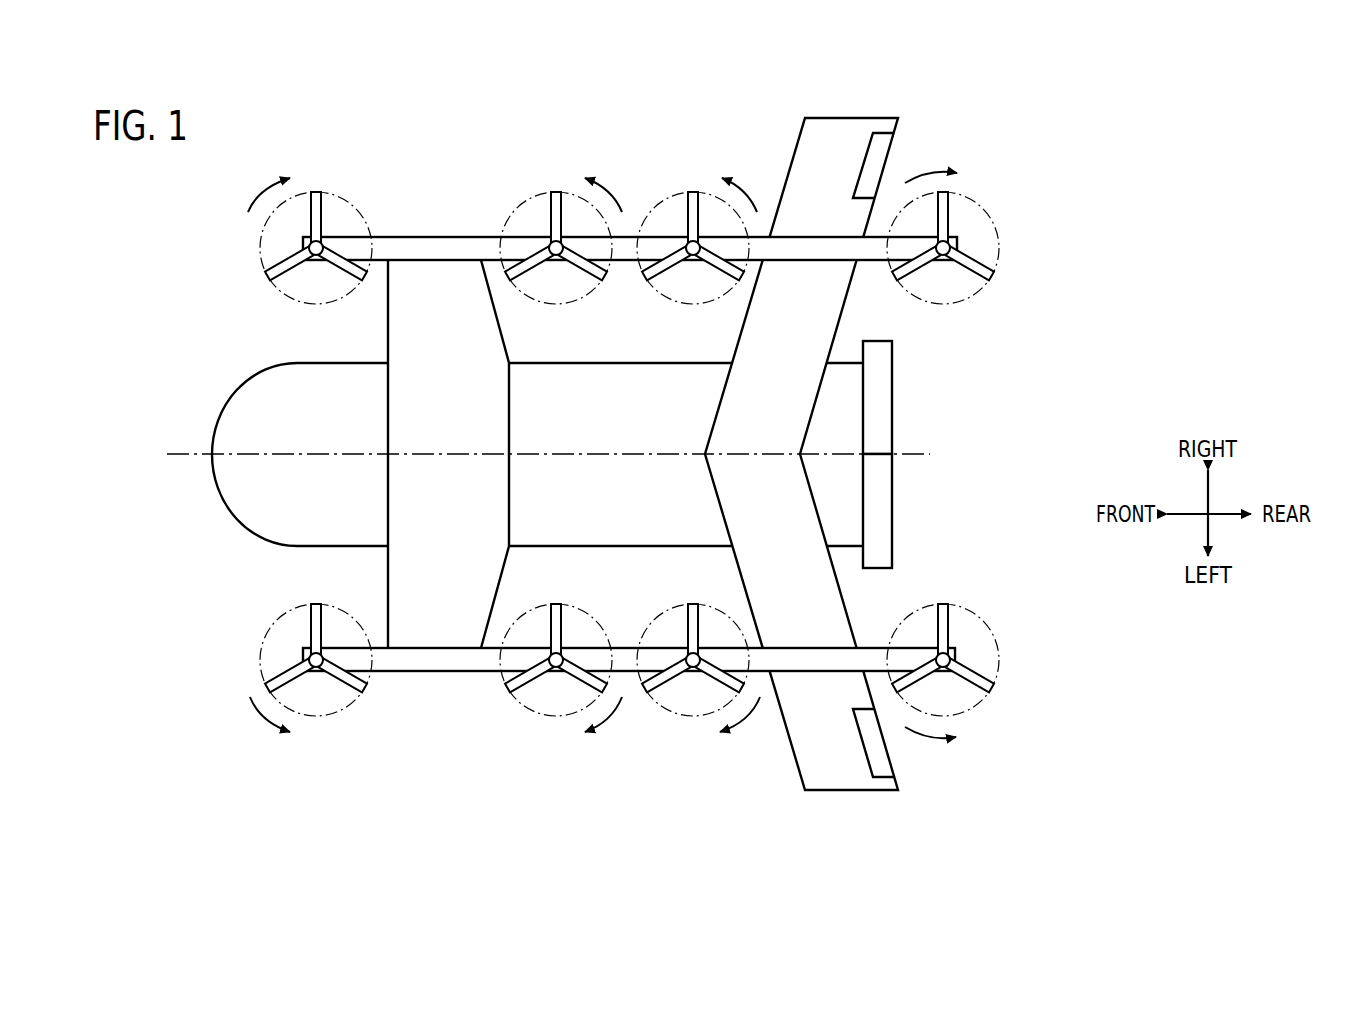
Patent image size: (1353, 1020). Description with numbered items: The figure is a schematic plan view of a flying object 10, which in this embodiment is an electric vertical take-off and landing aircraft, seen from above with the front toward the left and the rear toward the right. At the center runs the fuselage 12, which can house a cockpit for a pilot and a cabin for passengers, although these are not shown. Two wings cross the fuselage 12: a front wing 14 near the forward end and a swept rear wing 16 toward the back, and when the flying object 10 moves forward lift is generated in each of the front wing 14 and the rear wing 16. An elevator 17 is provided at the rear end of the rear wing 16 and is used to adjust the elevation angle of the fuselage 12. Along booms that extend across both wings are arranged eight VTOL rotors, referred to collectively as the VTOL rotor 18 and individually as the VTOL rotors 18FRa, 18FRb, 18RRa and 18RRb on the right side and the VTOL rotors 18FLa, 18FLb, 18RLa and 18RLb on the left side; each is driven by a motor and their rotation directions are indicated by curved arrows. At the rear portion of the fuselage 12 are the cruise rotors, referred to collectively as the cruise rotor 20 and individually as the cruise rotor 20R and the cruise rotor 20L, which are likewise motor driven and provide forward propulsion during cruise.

The flying object 10 is at (134, 209).
The fuselage 12 is at (216, 426).
The front wing 14 is at (424, 282).
The rear wing 16 is at (842, 118).
The elevator 17 is at (878, 148).
The VTOL rotor 18 is at (690, 454).
The VTOL rotor 18FRa is at (316, 191).
The VTOL rotor 18FRb is at (556, 191).
The VTOL rotor 18RRa is at (947, 200).
The VTOL rotor 18RRb is at (692, 191).
The VTOL rotor 18FLa is at (340, 684).
The VTOL rotor 18FLb is at (508, 684).
The VTOL rotor 18RLa is at (985, 684).
The VTOL rotor 18RLb is at (662, 684).
The cruise rotor 20 is at (942, 454).
The cruise rotor 20R is at (895, 405).
The cruise rotor 20L is at (895, 512).